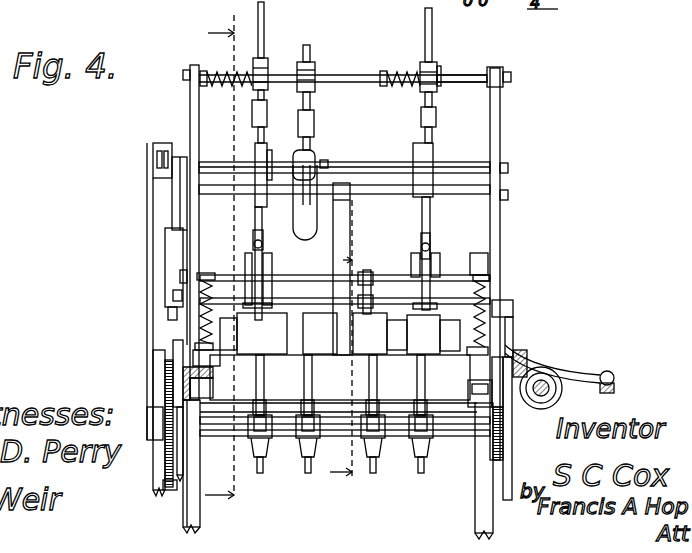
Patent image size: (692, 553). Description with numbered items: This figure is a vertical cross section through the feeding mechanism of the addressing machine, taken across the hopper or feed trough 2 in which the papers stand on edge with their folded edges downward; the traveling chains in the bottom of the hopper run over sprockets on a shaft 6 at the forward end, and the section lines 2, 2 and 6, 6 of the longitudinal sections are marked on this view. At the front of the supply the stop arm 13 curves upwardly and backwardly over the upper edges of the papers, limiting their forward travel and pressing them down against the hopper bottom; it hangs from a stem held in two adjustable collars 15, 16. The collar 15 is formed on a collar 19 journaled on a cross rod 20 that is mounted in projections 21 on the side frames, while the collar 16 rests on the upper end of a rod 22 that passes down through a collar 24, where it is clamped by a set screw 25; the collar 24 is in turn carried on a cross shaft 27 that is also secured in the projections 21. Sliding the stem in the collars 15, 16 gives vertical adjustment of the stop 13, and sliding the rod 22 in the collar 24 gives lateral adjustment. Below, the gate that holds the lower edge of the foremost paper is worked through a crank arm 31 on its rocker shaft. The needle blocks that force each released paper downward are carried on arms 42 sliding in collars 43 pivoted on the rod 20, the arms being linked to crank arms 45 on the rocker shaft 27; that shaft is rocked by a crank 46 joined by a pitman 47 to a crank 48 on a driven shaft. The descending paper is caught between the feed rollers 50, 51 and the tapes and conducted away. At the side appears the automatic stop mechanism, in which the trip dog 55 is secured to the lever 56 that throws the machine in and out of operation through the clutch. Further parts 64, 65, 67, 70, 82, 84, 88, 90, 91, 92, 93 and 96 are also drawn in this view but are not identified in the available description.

The hopper or feed trough 2 is at (347, 352).
The shaft 6 is at (219, 270).
The stop arm 13 is at (303, 232).
The collar 15 is at (307, 63).
The collar 16 is at (265, 116).
The collar 19 is at (313, 72).
The cross rod 20 is at (445, 77).
The projections 21 is at (192, 110).
The rod 22 is at (293, 173).
The collar 24 is at (308, 150).
The set screw 25 is at (328, 163).
The cross shaft 27 is at (447, 173).
The crank arm 31 is at (183, 247).
The arms 42 is at (425, 22).
The collars 43 is at (262, 68).
The crank arms 45 is at (263, 185).
The crank 46 is at (163, 143).
The pitman 47 is at (148, 277).
The crank 48 is at (163, 385).
The feed roller 50 is at (280, 372).
The feed roller 51 is at (423, 333).
The trip dog 55 is at (527, 357).
The lever 56 is at (617, 383).
The rod with eye 64 is at (447, 277).
The spring and lever 65 is at (190, 323).
The plate 67 is at (513, 307).
The pulley 70 is at (539, 400).
The lower frame 82 is at (262, 378).
The hanger 84 is at (268, 437).
The hatched bracket 88 is at (198, 343).
The spring 90 is at (480, 308).
The bracket 91 is at (481, 280).
The lower cross bar 92 is at (475, 194).
The center post 93 is at (347, 233).
The vertical bar 96 is at (203, 273).